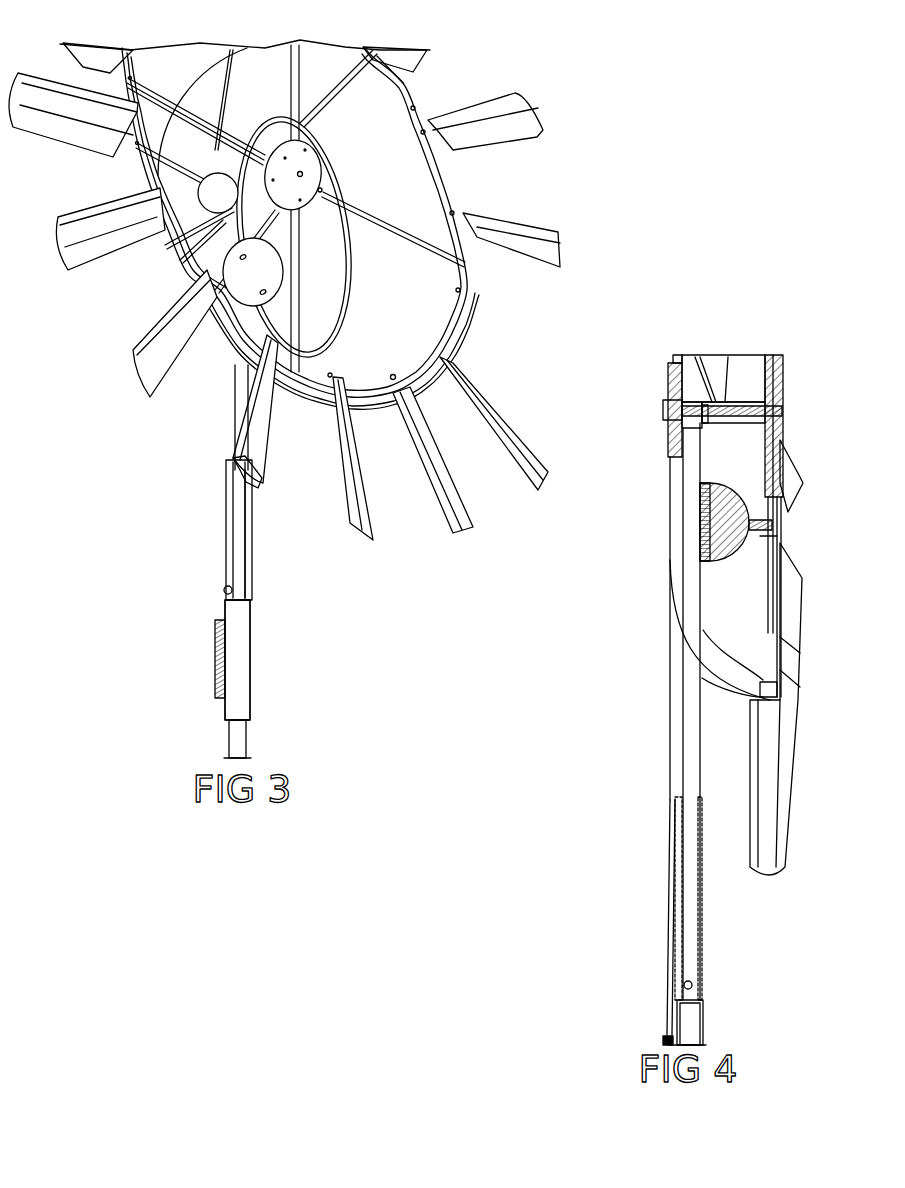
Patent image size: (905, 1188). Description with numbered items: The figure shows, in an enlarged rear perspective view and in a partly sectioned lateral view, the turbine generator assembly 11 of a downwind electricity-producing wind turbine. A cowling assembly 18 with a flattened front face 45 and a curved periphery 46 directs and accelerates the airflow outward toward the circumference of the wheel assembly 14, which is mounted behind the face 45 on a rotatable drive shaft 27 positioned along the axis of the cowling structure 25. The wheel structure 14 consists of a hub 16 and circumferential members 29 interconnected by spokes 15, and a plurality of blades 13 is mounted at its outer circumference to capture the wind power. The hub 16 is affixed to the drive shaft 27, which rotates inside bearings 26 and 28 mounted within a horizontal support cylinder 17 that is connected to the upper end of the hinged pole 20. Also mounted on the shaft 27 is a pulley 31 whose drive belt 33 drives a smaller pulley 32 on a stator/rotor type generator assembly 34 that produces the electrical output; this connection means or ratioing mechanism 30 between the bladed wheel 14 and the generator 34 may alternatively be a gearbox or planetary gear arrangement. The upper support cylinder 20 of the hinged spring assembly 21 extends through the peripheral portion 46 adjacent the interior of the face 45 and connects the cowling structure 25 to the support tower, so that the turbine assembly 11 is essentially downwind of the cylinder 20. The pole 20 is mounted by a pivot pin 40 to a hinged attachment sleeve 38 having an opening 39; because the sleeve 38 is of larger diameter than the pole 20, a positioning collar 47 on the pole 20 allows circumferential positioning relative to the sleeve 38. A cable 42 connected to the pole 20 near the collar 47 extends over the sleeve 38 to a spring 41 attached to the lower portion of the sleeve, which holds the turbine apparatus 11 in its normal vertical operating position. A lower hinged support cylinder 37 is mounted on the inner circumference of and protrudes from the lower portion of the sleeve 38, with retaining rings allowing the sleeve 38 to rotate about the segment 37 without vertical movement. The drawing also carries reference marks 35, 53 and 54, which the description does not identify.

In FIG. 3, the turbine generator assembly 11 is at (130, 290).
In FIG. 3, the blades 13 is at (80, 220).
In FIG. 4, the blades 13 is at (795, 487).
In FIG. 3, the wheel assembly 14 is at (455, 180).
In FIG. 3, the spokes 15 is at (305, 95).
In FIG. 4, the spokes 15 is at (782, 540).
In FIG. 3, the hub 16 is at (310, 163).
In FIG. 4, the hub 16 is at (782, 404).
In FIG. 4, the horizontal support cylinder 17 is at (727, 400).
In FIG. 4, the cowling assembly 18 is at (637, 548).
In FIG. 3, the upper support cylinder 20 is at (233, 412).
In FIG. 4, the upper support cylinder 20 is at (685, 725).
In FIG. 3, the hinged spring assembly 21 is at (258, 645).
In FIG. 4, the hinged spring assembly 21 is at (660, 980).
In FIG. 4, the cowling structure 25 is at (669, 611).
In FIG. 4, the bearing 26 is at (673, 398).
In FIG. 4, the drive shaft 27 is at (712, 405).
In FIG. 4, the bearing 28 is at (760, 402).
In FIG. 3, the circumferential members 29 is at (407, 85).
In FIG. 3, the ratioing mechanism 30 is at (348, 233).
In FIG. 3, the pulley 31 is at (322, 190).
In FIG. 3, the smaller pulley 32 is at (300, 255).
In FIG. 3, the drive belt 33 is at (325, 228).
In FIG. 3, the stator/rotor generator assembly 34 is at (242, 284).
In FIG. 4, the stator/rotor generator assembly 34 is at (732, 498).
In FIG. 4, the spring rod 35 is at (698, 522).
In FIG. 3, the lower hinged support cylinder 37 is at (246, 750).
In FIG. 4, the lower hinged support cylinder 37 is at (690, 1035).
In FIG. 3, the hinged attachment sleeve 38 is at (250, 693).
In FIG. 4, the hinged attachment sleeve 38 is at (703, 1013).
In FIG. 3, the opening 39 is at (258, 578).
In FIG. 3, the pivot pin 40 is at (224, 592).
In FIG. 4, the pivot pin 40 is at (693, 983).
In FIG. 3, the spring 41 is at (216, 683).
In FIG. 4, the spring 41 is at (662, 1036).
In FIG. 3, the cable 42 is at (226, 541).
In FIG. 4, the cable 42 is at (675, 867).
In FIG. 4, the front face 45 is at (670, 482).
In FIG. 3, the curved periphery 46 is at (293, 395).
In FIG. 4, the curved periphery 46 is at (722, 687).
In FIG. 3, the positioning collar 47 is at (245, 470).
In FIG. 4, the bolt 53 is at (662, 411).
In FIG. 3, the rim fastener 54 is at (390, 373).